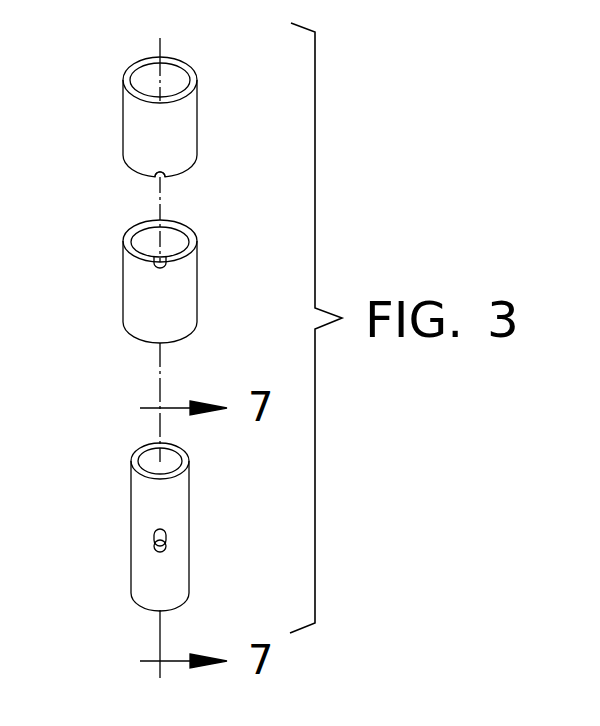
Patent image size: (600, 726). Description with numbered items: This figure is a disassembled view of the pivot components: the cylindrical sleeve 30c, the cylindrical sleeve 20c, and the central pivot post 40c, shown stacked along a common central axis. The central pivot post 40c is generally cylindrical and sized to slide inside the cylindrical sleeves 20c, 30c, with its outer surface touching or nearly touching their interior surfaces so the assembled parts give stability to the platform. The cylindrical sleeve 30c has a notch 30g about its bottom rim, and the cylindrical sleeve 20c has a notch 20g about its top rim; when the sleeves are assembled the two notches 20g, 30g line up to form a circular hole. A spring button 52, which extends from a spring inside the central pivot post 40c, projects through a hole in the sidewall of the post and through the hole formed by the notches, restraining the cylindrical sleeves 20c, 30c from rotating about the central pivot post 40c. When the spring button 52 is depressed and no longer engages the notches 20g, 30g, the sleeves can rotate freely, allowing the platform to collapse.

The cylindrical sleeve 30c is at (197, 118).
The notch 30g is at (158, 175).
The cylindrical sleeve 20c is at (197, 280).
The notch 20g is at (158, 268).
The central pivot post 40c is at (189, 532).
The spring button 52 is at (158, 552).